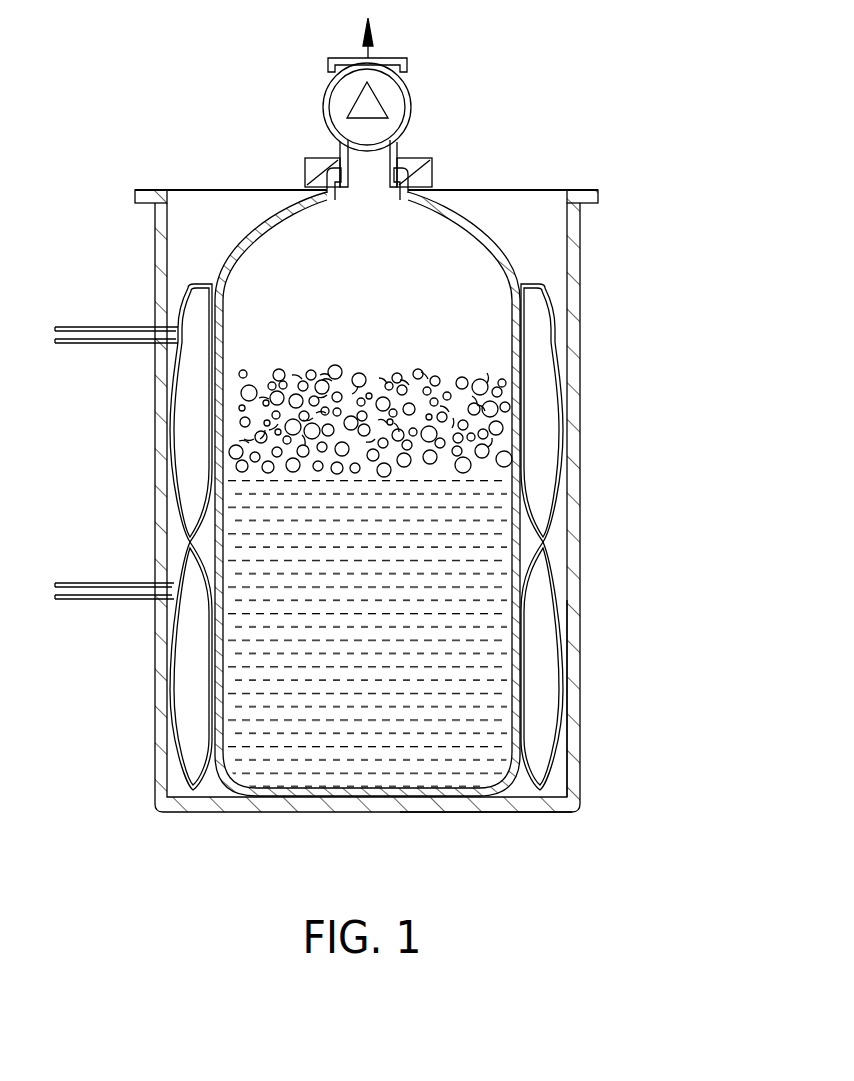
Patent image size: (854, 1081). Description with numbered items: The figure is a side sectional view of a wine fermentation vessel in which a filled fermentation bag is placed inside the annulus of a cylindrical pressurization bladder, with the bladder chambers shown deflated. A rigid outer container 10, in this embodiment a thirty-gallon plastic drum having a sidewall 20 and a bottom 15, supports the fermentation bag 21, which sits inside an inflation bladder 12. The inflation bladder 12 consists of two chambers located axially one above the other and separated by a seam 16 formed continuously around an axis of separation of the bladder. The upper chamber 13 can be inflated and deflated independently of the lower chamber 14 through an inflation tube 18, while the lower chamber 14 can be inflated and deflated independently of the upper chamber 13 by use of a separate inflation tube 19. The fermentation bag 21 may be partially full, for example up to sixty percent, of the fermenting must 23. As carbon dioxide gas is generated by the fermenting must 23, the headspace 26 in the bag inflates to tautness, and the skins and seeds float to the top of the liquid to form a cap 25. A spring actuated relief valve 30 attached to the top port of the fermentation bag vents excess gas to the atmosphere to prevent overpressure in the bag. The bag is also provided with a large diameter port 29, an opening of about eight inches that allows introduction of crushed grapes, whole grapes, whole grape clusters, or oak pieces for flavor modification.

The rigid outer container 10 is at (580, 313).
The inflation bladder 12 is at (540, 643).
The upper chamber 13 is at (193, 318).
The lower chamber 14 is at (187, 740).
The bottom 15 is at (485, 812).
The seam 16 is at (541, 542).
The inflation tube 18 is at (98, 342).
The inflation tube 19 is at (87, 599).
The sidewall 20 is at (580, 730).
The fermentation bag 21 is at (478, 223).
The fermenting must 23 is at (297, 730).
The cap 25 is at (337, 370).
The headspace 26 is at (288, 275).
The large diameter port 29 is at (427, 157).
The spring actuated relief valve 30 is at (413, 97).